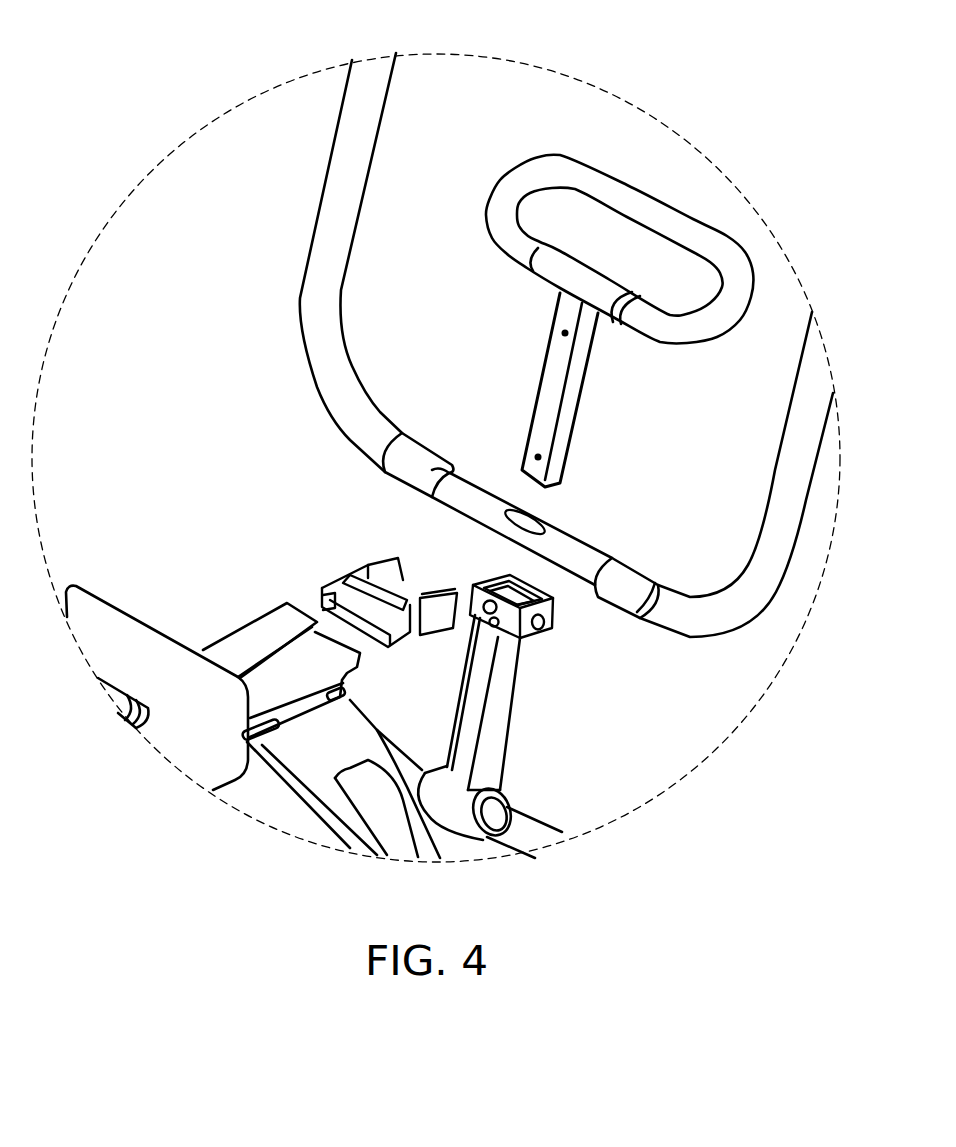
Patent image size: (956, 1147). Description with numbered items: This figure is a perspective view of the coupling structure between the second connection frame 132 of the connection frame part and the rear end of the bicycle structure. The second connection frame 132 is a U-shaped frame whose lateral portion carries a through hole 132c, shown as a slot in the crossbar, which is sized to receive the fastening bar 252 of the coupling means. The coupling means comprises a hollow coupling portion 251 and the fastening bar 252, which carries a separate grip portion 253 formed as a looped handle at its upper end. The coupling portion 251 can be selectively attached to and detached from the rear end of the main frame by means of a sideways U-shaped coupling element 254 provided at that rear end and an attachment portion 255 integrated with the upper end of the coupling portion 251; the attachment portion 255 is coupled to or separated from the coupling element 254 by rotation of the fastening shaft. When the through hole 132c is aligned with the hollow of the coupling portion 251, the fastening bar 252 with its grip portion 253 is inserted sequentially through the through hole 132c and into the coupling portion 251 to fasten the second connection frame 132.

The second connection frame 132 is at (347, 90).
The through hole 132c is at (537, 513).
The coupling portion 251 is at (500, 723).
The fastening bar 252 is at (568, 405).
The grip portion 253 is at (700, 242).
The coupling element 254 is at (553, 623).
The attachment portion 255 is at (362, 562).